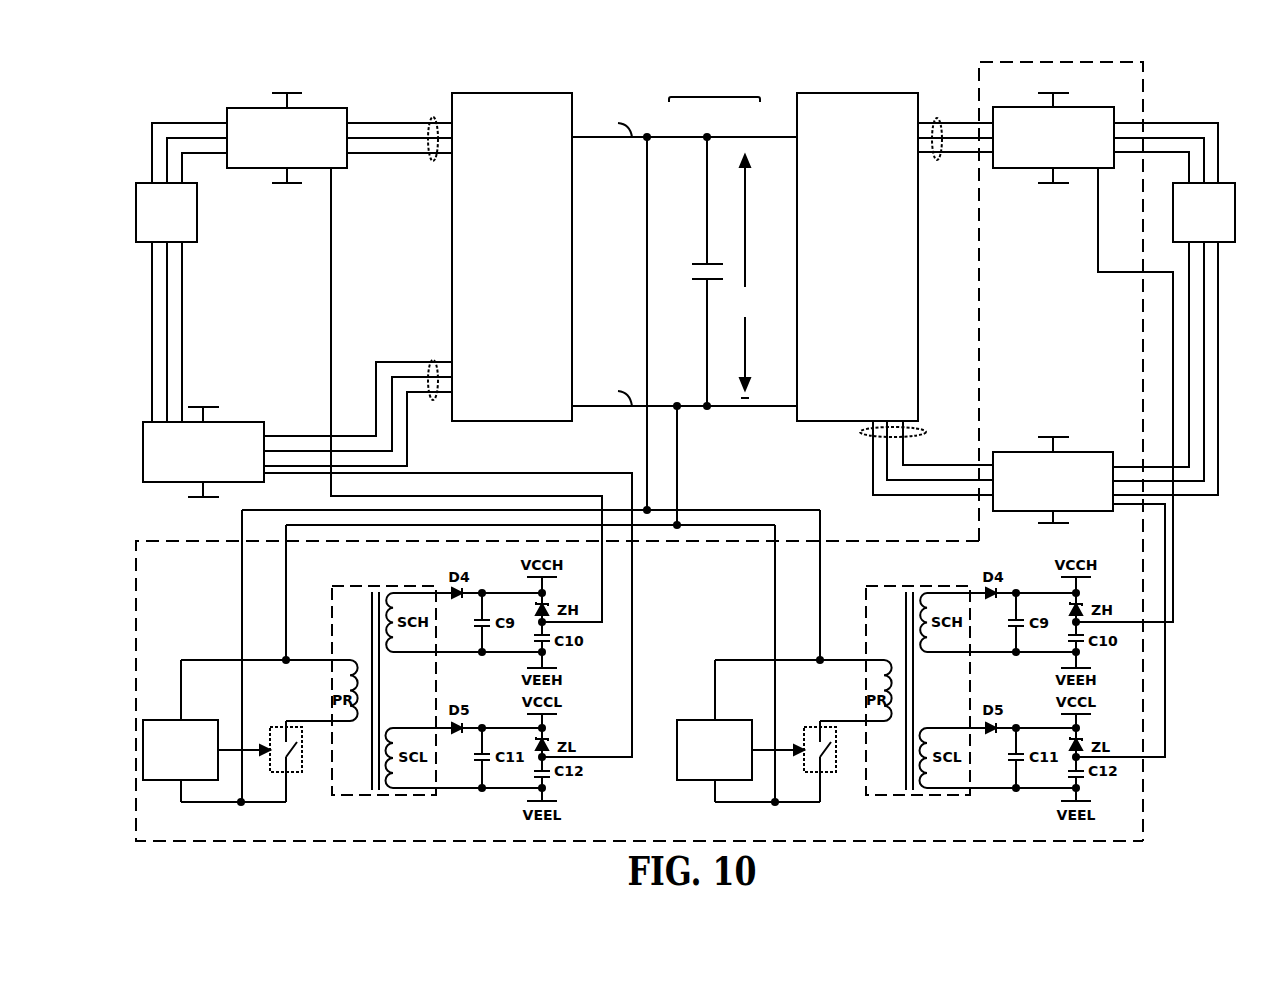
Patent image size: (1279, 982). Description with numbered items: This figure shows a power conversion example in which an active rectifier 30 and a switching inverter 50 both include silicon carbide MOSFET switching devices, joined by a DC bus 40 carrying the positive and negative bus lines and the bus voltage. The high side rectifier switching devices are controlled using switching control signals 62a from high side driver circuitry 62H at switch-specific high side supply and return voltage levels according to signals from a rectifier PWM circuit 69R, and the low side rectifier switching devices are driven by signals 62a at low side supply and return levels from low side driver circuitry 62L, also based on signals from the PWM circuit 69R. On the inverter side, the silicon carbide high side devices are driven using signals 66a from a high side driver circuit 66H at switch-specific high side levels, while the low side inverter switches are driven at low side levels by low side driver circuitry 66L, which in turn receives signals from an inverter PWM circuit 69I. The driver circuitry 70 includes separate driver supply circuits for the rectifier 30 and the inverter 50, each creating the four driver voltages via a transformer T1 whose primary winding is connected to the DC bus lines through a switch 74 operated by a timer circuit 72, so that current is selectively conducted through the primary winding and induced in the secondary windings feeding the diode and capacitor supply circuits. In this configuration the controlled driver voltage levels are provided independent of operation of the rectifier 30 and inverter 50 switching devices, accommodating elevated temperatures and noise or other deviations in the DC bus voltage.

The active rectifier 30 is at (515, 93).
The DC bus 40 is at (718, 97).
The switching inverter 50 is at (858, 93).
The high side driver circuitry 62H is at (317, 108).
The low side driver circuitry 62L is at (235, 422).
The switching control signal 62a is at (433, 117).
The high side driver circuit 66H is at (1025, 452).
The low side driver circuitry 66L is at (1102, 107).
The signals 66a is at (937, 118).
The rectifier PWM circuit 69R is at (141, 183).
The inverter PWM controller 69I is at (1228, 183).
The driver circuitry 70 is at (158, 541).
The timer circuit 72 is at (172, 720).
The switch 74 is at (275, 727).
The transformer T1 is at (380, 586).